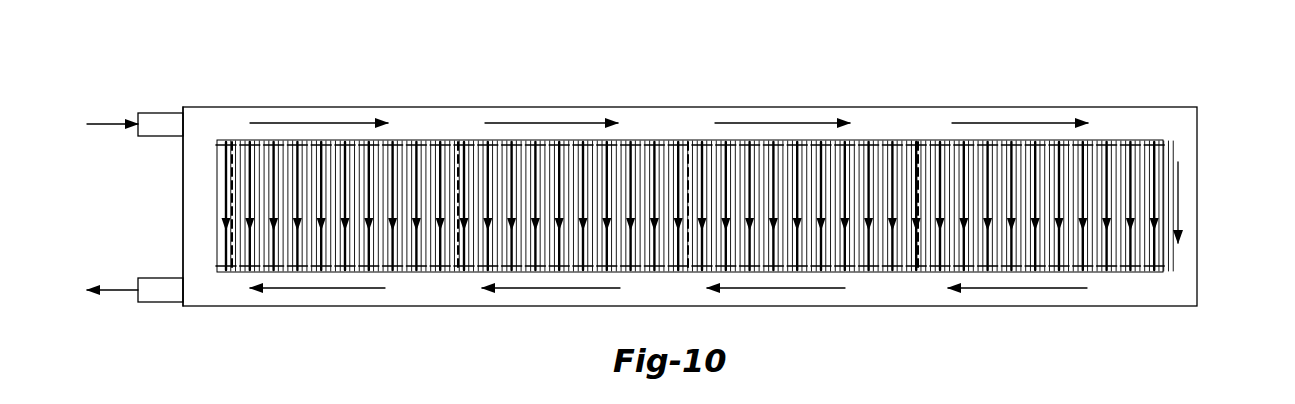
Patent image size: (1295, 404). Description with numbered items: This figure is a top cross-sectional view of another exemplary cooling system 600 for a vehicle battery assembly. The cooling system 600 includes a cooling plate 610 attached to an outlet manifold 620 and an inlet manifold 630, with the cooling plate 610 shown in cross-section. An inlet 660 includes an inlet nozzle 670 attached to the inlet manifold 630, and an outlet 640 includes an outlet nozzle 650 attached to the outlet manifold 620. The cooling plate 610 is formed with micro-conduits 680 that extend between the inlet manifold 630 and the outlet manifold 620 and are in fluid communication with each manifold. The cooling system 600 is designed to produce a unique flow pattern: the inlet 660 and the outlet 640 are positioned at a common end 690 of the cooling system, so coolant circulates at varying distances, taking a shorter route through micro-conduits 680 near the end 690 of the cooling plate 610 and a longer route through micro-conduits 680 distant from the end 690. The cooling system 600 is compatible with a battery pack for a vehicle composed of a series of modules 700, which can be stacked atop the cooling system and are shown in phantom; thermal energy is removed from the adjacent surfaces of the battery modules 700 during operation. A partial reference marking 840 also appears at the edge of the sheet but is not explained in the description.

The cooling system 600 is at (1222, 93).
The cooling plate 610 is at (200, 228).
The outlet manifold 620 is at (388, 306).
The inlet manifold 630 is at (523, 110).
The outlet 640 is at (242, 344).
The outlet nozzle 650 is at (160, 302).
The inlet 660 is at (242, 70).
The inlet nozzle 670 is at (160, 112).
The micro-conduits 680 is at (908, 142).
The common end 690 is at (166, 181).
The modules 700 is at (415, 140).
The reference 840 is at (1219, 399).